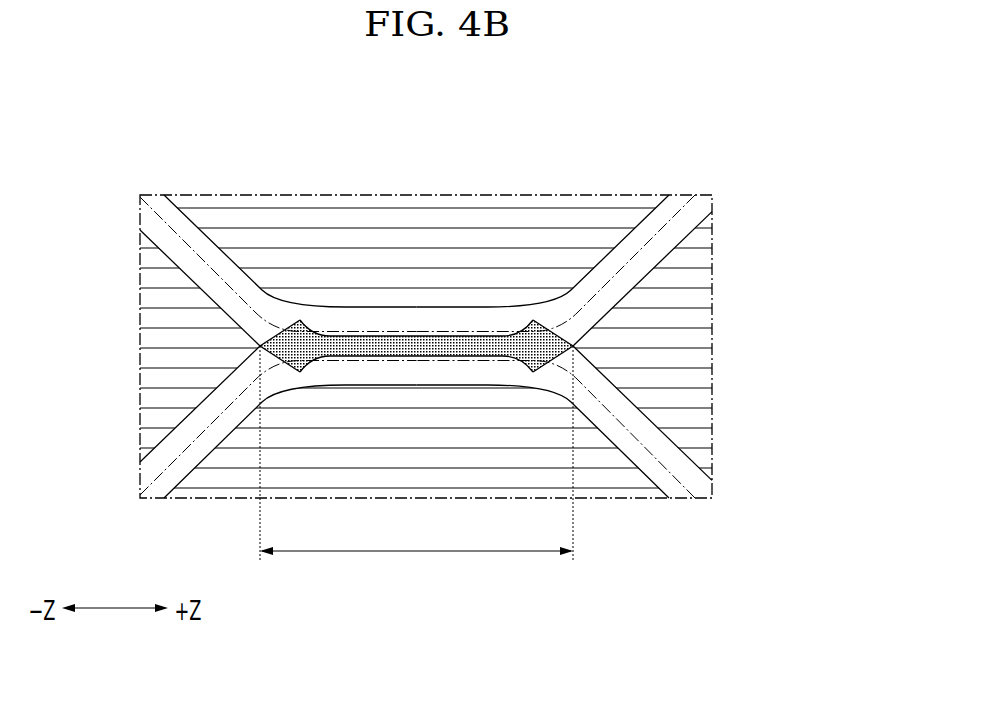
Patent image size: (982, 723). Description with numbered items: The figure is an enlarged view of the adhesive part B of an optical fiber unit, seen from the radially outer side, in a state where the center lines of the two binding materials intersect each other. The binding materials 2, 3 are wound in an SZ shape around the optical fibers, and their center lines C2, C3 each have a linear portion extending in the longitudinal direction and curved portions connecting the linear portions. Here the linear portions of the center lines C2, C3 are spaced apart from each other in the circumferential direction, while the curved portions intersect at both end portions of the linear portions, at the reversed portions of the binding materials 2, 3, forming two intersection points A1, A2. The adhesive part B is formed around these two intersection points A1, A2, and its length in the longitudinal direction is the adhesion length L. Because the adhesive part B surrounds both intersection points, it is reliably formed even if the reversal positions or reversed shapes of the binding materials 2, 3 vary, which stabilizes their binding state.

The binding material 2 is at (188, 218).
The binding material 3 is at (175, 447).
The intersection point A1 is at (304, 343).
The intersection point A2 is at (537, 343).
The adhesive part B is at (415, 335).
The center line of the binding material 2 C2 is at (645, 228).
The center line of the binding material 3 C3 is at (650, 468).
The adhesion length L is at (416, 454).